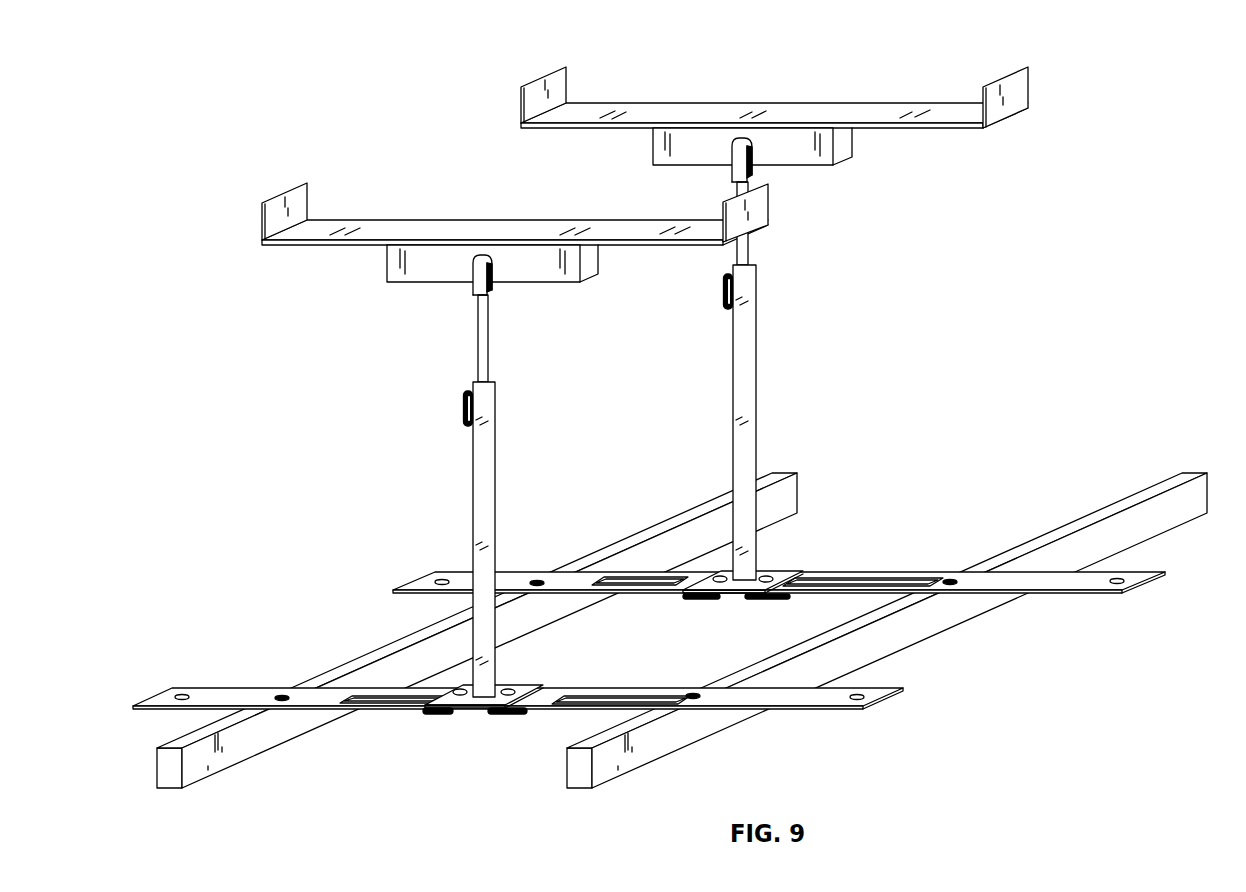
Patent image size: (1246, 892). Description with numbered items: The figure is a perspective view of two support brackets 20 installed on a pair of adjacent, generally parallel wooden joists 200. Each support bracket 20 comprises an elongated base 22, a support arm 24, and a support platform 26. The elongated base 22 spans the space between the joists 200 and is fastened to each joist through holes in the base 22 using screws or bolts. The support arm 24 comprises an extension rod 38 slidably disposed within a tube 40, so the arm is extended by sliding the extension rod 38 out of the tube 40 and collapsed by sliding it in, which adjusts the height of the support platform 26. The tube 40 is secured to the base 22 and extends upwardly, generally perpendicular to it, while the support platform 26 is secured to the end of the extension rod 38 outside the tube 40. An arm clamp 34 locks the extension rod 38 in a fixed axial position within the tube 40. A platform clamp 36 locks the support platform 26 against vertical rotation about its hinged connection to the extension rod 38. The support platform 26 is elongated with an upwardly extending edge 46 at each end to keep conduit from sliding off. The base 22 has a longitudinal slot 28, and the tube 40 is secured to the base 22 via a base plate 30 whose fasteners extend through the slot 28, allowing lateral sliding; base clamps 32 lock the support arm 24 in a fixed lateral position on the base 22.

The support bracket 20 is at (638, 367).
The elongated base 22 is at (420, 582).
The support arm 24 is at (613, 439).
The support platform 26 is at (650, 118).
The slot 28 is at (862, 575).
The base plate 30 is at (776, 567).
The base clamps 32 is at (518, 716).
The arm clamp 34 is at (723, 287).
The platform clamp 36 is at (736, 166).
The extension rod 38 is at (746, 250).
The tube 40 is at (750, 379).
The upwardly extending edge 46 is at (563, 91).
The joists 200 is at (226, 752).